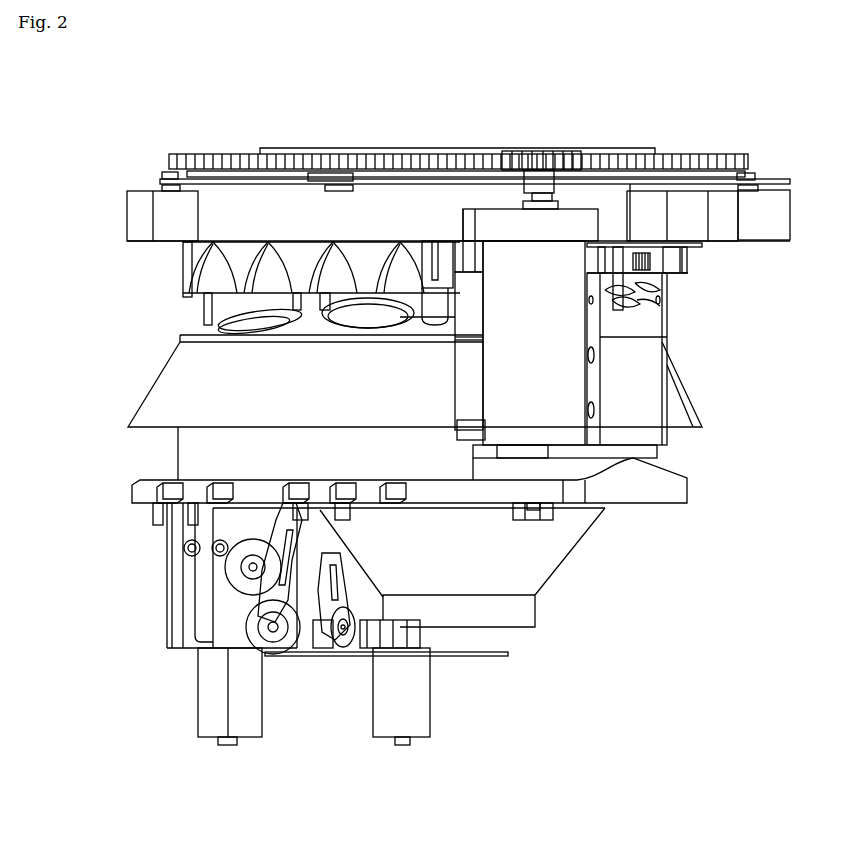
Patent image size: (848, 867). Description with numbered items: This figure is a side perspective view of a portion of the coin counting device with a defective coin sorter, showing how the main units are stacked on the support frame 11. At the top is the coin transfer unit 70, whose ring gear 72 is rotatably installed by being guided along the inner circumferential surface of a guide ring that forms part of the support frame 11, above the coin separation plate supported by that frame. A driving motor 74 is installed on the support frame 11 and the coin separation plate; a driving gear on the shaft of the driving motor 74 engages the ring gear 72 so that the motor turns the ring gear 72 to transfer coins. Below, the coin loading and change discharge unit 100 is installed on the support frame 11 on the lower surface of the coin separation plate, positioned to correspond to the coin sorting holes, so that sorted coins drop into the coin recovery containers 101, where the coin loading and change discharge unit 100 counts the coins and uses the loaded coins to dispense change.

The support frame 11 is at (140, 212).
The coin transfer unit 70 is at (757, 147).
The ring gear 72 is at (688, 163).
The driving motor 74 is at (573, 428).
The coin loading and change discharge unit 100 is at (165, 665).
The coin recovery container 101 is at (180, 336).